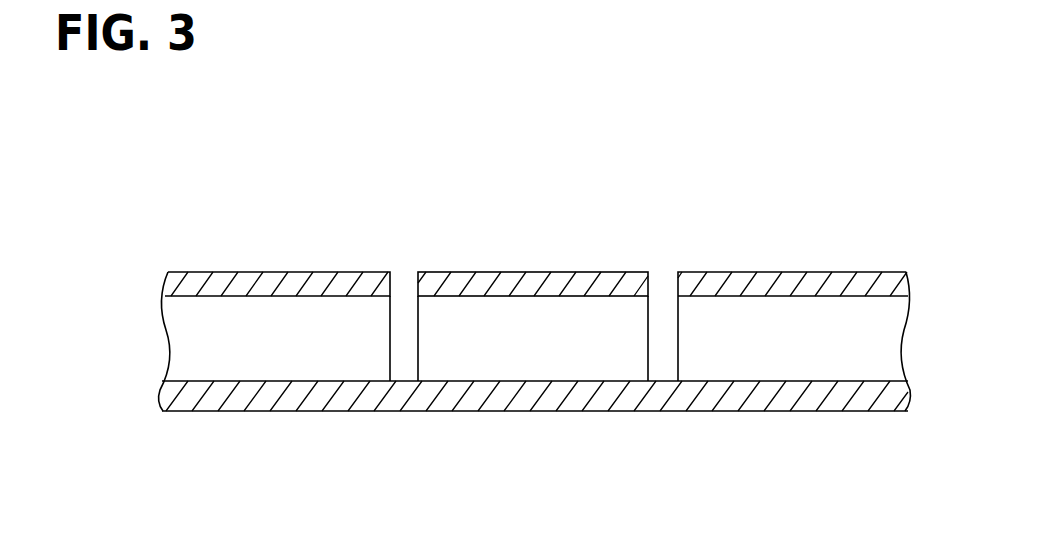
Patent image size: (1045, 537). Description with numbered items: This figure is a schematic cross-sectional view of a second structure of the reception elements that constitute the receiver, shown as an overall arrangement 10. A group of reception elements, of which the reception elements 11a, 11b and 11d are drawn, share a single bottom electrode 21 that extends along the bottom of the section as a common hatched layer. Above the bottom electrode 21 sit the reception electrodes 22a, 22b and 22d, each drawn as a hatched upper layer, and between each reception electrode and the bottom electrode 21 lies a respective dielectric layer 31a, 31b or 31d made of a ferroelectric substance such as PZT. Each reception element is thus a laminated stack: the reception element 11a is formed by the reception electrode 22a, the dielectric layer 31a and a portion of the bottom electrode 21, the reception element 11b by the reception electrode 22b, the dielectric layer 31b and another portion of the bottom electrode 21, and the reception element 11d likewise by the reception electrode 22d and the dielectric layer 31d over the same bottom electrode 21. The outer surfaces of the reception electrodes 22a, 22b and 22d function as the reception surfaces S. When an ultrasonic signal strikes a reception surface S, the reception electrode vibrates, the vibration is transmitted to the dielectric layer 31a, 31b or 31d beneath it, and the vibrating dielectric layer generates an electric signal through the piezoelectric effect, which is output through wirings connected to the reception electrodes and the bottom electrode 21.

The semiconductor device 10 is at (543, 188).
The reception element 11a is at (533, 329).
The reception element 11b is at (274, 327).
The reception element 11d is at (794, 332).
The bottom electrode 21 is at (878, 407).
The reception electrode 22a is at (512, 272).
The reception electrode 22b is at (267, 272).
The reception electrode 22d is at (787, 272).
The dielectric layer 31a is at (512, 365).
The dielectric layer 31b is at (273, 365).
The dielectric layer 31d is at (783, 372).
The reception surface S is at (603, 272).